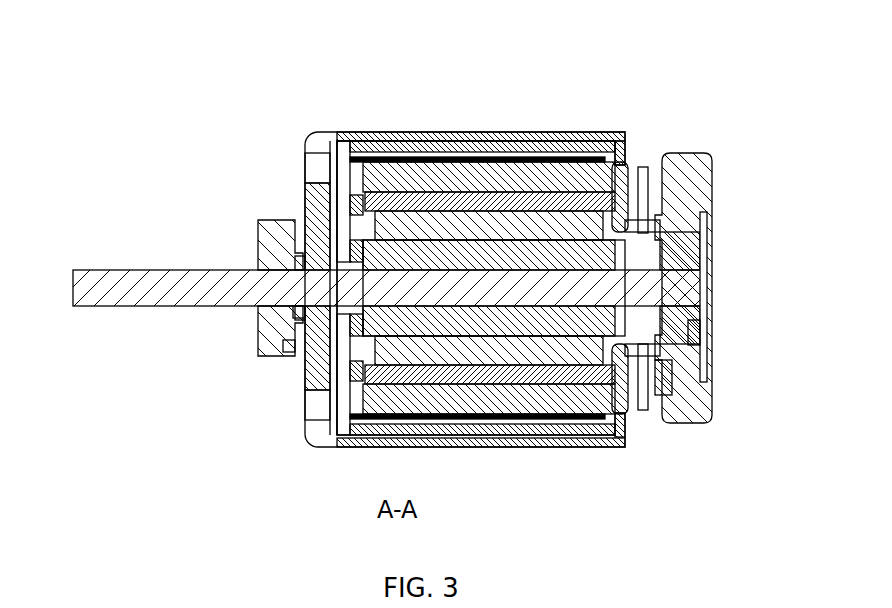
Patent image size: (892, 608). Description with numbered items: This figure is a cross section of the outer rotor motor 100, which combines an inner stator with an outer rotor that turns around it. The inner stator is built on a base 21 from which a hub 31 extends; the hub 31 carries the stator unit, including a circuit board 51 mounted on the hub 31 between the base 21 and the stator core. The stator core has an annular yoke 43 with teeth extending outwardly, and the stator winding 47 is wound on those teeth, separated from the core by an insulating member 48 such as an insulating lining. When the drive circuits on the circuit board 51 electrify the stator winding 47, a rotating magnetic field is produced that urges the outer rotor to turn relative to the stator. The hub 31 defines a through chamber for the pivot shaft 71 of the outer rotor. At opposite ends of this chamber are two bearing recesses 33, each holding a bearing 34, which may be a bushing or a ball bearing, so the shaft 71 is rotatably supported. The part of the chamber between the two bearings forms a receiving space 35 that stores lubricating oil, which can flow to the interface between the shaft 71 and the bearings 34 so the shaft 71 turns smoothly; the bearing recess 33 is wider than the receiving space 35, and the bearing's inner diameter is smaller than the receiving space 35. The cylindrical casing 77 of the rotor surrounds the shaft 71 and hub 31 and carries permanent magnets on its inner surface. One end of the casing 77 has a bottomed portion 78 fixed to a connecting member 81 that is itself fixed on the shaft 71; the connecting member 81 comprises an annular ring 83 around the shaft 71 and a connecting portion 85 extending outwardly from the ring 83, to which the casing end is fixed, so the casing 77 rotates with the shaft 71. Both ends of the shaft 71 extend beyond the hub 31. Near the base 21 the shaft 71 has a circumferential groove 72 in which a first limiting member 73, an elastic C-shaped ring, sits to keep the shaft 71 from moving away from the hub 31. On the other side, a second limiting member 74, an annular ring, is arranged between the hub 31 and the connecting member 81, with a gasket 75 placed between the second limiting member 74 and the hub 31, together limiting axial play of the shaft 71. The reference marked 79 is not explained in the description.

The outer rotor motor 100 is at (607, 31).
The base 21 is at (680, 152).
The hub 31 is at (578, 327).
The bearing recess 33 is at (407, 150).
The bearing 34 is at (372, 130).
The receiving space 35 is at (527, 263).
The annular yoke 43 is at (472, 165).
The stator winding 47 is at (545, 178).
The insulating member 48 is at (497, 400).
The circuit board 51 is at (641, 165).
The pivot shaft 71 is at (130, 287).
The groove 72 is at (703, 297).
The first limiting member 73 is at (708, 332).
The second limiting member 74 is at (317, 223).
The gasket 75 is at (317, 350).
The cylindrical casing 77 is at (347, 130).
The bottomed portion 78 is at (312, 200).
The housing outer wall 79 is at (583, 130).
The connecting member 81 is at (216, 359).
The annular ring 83 is at (260, 327).
The connecting portion 85 is at (285, 360).